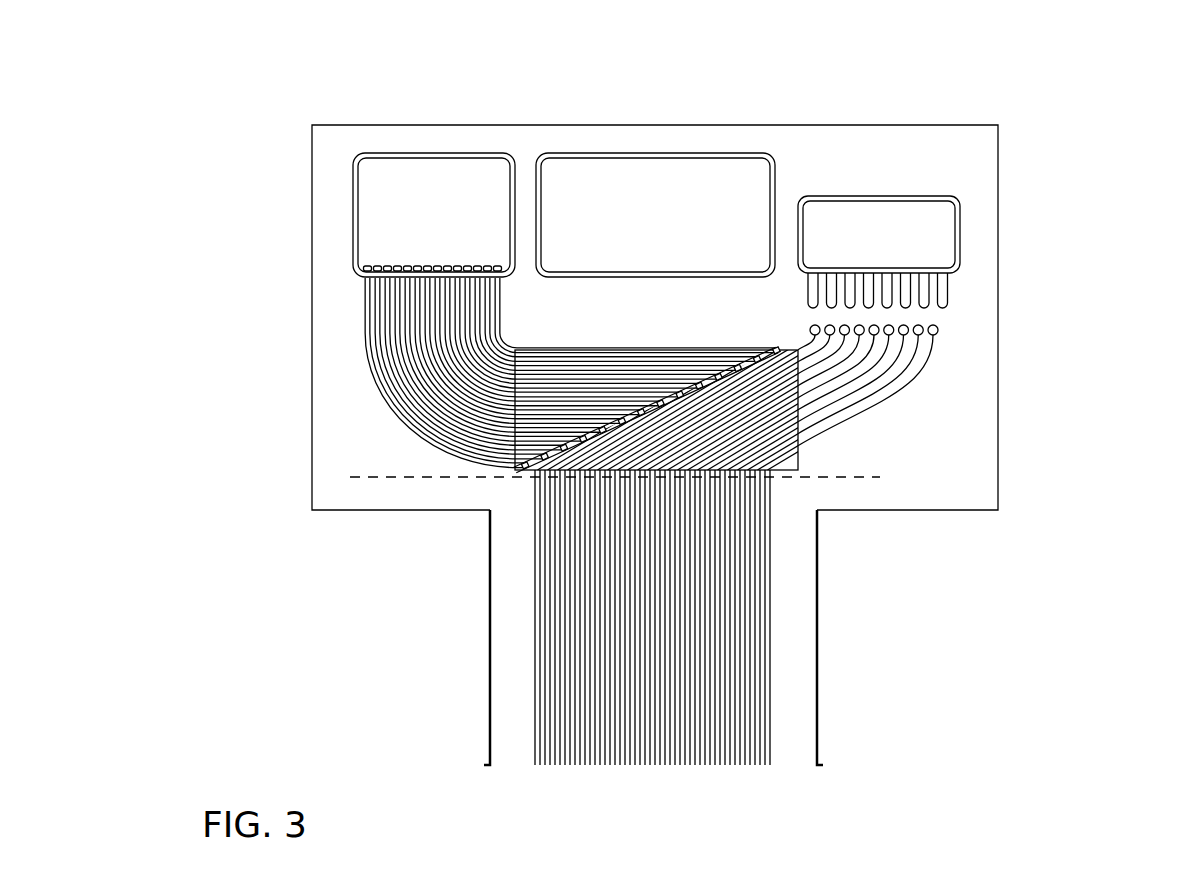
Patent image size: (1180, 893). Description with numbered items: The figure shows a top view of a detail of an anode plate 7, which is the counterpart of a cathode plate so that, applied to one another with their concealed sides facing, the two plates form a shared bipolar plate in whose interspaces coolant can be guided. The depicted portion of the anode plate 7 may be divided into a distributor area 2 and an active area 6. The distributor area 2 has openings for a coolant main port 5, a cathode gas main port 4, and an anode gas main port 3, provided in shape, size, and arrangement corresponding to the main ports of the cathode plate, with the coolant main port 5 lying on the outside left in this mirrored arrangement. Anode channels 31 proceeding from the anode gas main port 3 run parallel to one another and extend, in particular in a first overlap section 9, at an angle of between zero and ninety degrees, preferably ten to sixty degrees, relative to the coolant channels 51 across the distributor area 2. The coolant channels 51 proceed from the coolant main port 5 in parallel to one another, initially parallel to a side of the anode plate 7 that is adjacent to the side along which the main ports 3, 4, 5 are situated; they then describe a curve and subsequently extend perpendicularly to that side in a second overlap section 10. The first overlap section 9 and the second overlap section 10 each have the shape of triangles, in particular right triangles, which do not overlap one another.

The anode plate 7 is at (731, 413).
The distributor area 2 is at (1023, 128).
The active area 6 is at (1023, 532).
The coolant main port 5 is at (427, 217).
The cathode gas main port 4 is at (675, 172).
The anode gas main port 3 is at (885, 213).
The coolant channels 51 is at (383, 327).
The anode channels 31 is at (930, 362).
The second overlap section 10 is at (546, 349).
The first overlap section 9 is at (801, 469).